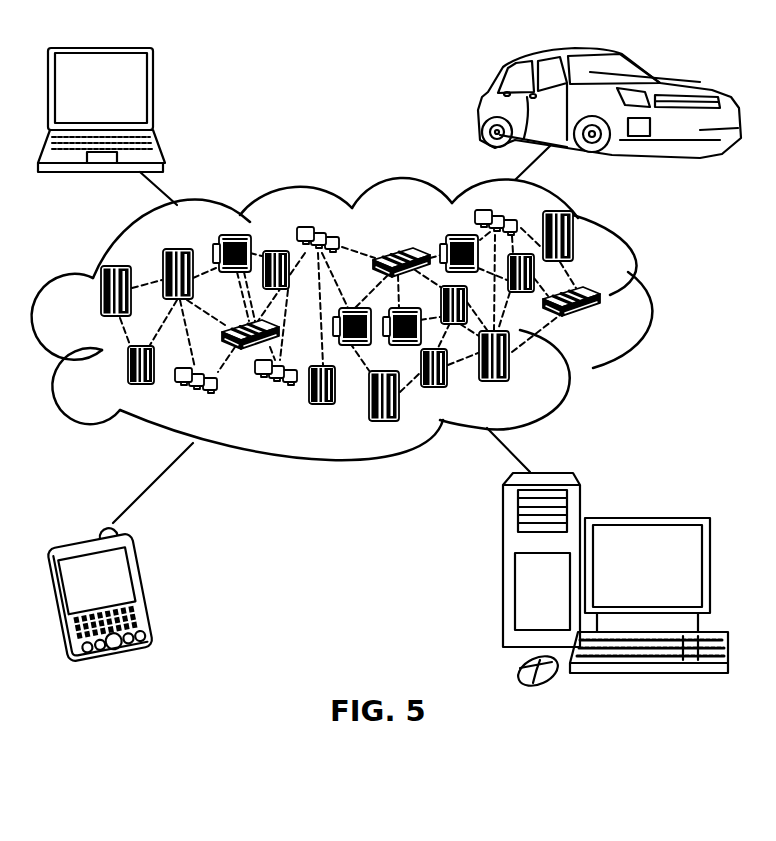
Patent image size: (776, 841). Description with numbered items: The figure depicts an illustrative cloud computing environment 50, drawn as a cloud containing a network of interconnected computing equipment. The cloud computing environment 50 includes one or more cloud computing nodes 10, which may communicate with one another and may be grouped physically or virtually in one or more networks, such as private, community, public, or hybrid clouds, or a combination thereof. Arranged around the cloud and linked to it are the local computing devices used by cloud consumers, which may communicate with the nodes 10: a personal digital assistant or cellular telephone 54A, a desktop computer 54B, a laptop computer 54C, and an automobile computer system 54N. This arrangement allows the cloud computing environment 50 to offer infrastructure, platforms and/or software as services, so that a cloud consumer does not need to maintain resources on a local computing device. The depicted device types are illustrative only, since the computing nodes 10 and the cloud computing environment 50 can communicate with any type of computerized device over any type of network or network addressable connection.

The cloud computing node 10 is at (607, 326).
The cloud computing environment 50 is at (647, 301).
The personal digital assistant or cellular telephone 54A is at (144, 585).
The desktop computer 54B is at (647, 517).
The laptop computer 54C is at (155, 96).
The automobile computer system 54N is at (482, 107).